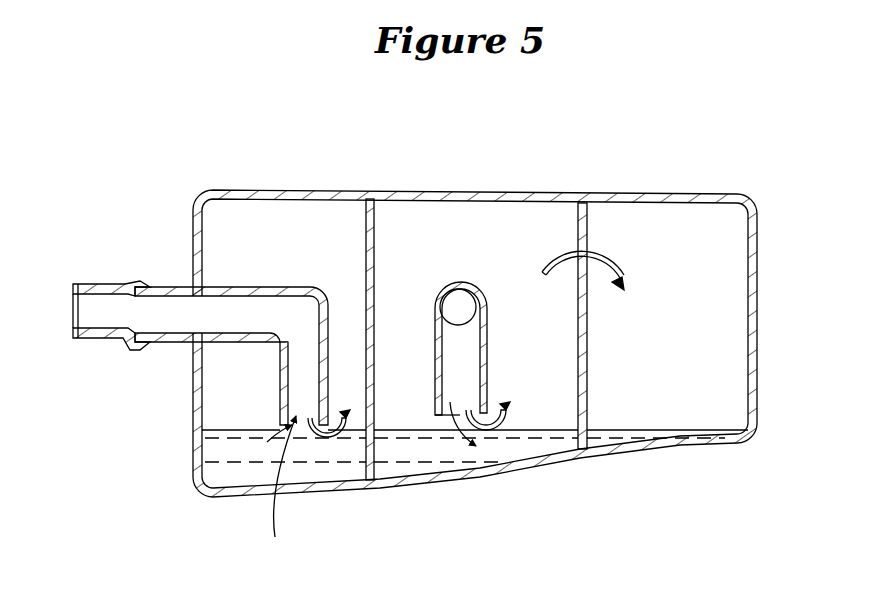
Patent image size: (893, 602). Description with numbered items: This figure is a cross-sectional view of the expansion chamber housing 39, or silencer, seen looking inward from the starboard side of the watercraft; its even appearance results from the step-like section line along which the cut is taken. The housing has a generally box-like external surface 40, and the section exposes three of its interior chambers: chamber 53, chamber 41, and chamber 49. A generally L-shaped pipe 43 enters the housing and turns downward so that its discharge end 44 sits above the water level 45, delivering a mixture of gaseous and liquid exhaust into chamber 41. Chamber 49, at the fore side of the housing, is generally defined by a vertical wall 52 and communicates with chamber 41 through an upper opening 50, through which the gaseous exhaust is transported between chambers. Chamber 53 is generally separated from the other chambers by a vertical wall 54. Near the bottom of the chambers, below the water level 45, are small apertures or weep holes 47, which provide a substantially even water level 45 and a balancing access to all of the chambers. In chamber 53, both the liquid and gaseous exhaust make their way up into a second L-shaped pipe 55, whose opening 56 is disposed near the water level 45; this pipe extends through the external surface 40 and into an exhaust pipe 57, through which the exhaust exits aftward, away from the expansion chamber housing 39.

The expansion chamber housing 39 is at (671, 172).
The external surface 40 is at (287, 190).
The chamber 41 is at (476, 317).
The L-shaped pipe 43 is at (488, 348).
The discharge end 44 is at (493, 408).
The water level 45 is at (703, 432).
The weep holes 47 is at (365, 465).
The chamber 49 is at (667, 317).
The opening 50 is at (577, 250).
The vertical wall 52 is at (587, 212).
The chamber 53 is at (284, 315).
The vertical wall 54 is at (377, 247).
The second L-shaped pipe 55 is at (332, 318).
The opening 56 is at (296, 490).
The exhaust pipe 57 is at (108, 340).